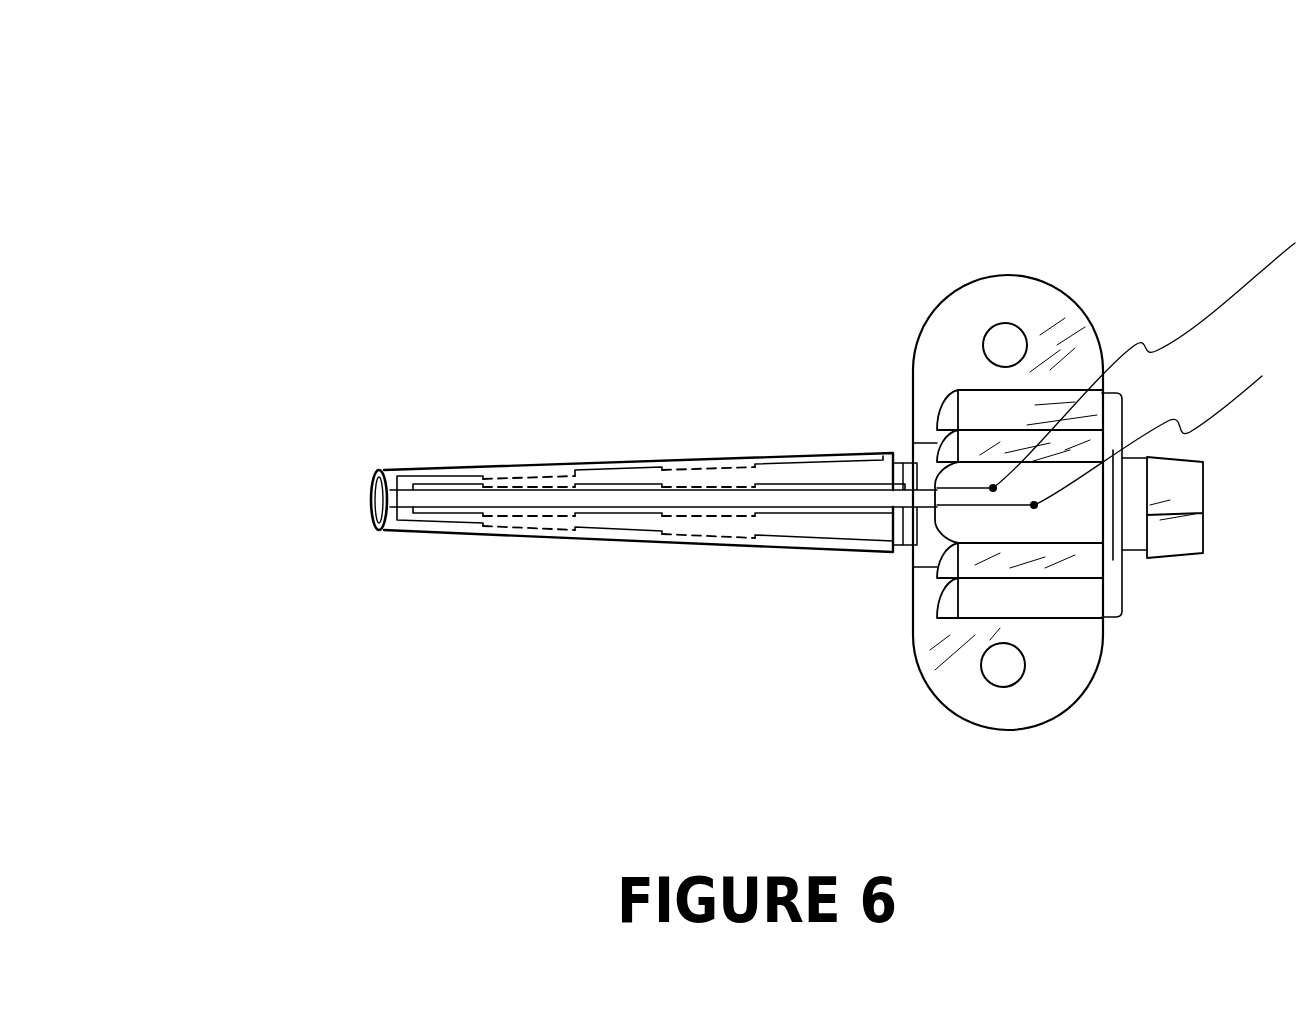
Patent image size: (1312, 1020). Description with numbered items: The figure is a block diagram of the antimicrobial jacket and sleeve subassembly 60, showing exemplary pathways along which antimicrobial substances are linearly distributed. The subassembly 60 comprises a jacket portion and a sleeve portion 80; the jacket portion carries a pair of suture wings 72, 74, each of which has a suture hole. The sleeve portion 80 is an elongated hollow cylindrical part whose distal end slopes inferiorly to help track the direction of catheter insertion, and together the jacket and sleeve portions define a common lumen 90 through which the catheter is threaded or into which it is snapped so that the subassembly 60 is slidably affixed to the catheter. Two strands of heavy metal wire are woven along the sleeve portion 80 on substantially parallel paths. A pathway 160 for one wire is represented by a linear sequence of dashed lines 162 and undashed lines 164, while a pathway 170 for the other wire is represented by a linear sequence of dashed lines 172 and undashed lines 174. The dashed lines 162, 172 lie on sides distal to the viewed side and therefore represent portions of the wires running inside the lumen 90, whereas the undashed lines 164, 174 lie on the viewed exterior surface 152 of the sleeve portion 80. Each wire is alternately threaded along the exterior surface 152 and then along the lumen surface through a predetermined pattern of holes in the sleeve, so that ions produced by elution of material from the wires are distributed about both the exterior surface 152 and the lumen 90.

The jacket and sleeve subassembly 60 is at (905, 177).
The suture wing 72 is at (1055, 665).
The suture wing 74 is at (1040, 305).
The sleeve portion 80 is at (694, 457).
The common lumen 90 is at (374, 490).
The exterior surface 152 is at (508, 474).
The pathway 160 is at (857, 455).
The dashed lines 162 is at (560, 466).
The undashed lines 164 is at (447, 472).
The pathway 170 is at (869, 489).
The dashed lines 172 is at (523, 470).
The undashed lines 174 is at (378, 492).